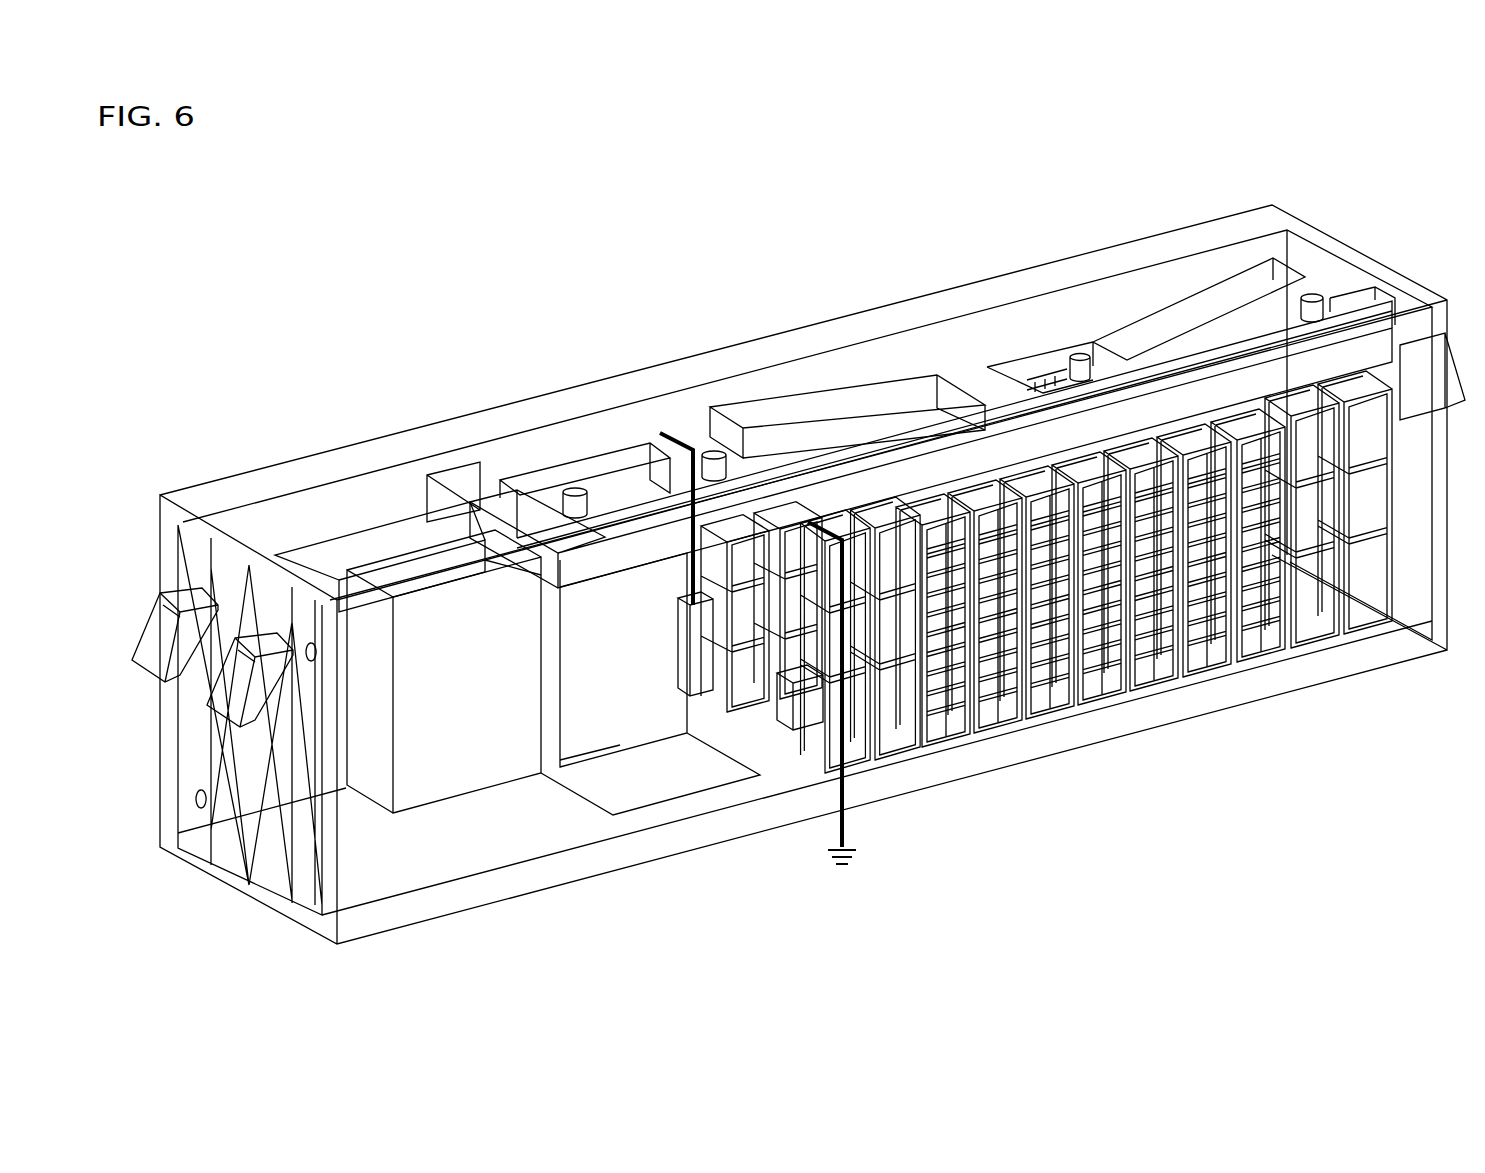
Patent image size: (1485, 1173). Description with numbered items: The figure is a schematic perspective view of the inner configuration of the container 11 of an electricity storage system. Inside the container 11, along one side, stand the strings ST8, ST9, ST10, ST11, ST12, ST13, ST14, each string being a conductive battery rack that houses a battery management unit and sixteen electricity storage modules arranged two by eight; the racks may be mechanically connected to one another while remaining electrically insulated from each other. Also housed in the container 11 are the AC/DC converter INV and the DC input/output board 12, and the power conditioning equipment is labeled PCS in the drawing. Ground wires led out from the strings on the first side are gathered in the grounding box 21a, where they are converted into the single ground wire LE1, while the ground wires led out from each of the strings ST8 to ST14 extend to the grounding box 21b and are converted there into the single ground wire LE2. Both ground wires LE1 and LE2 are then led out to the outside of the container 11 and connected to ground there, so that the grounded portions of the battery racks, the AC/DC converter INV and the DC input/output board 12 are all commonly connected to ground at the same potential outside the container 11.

The container 11 is at (1052, 262).
The DC input/output board 12 is at (482, 768).
The power conditioning system PCS is at (622, 684).
The AC/DC converter INV is at (595, 742).
The ground wire LE1 is at (668, 430).
The ground wire LE2 is at (848, 838).
The grounding box 21a is at (701, 650).
The grounding box 21b is at (808, 718).
The string ST8 is at (955, 745).
The string ST9 is at (1008, 720).
The string ST10 is at (1060, 690).
The string ST11 is at (1115, 690).
The string ST12 is at (1165, 685).
The string ST13 is at (1215, 680).
The string ST14 is at (1270, 670).